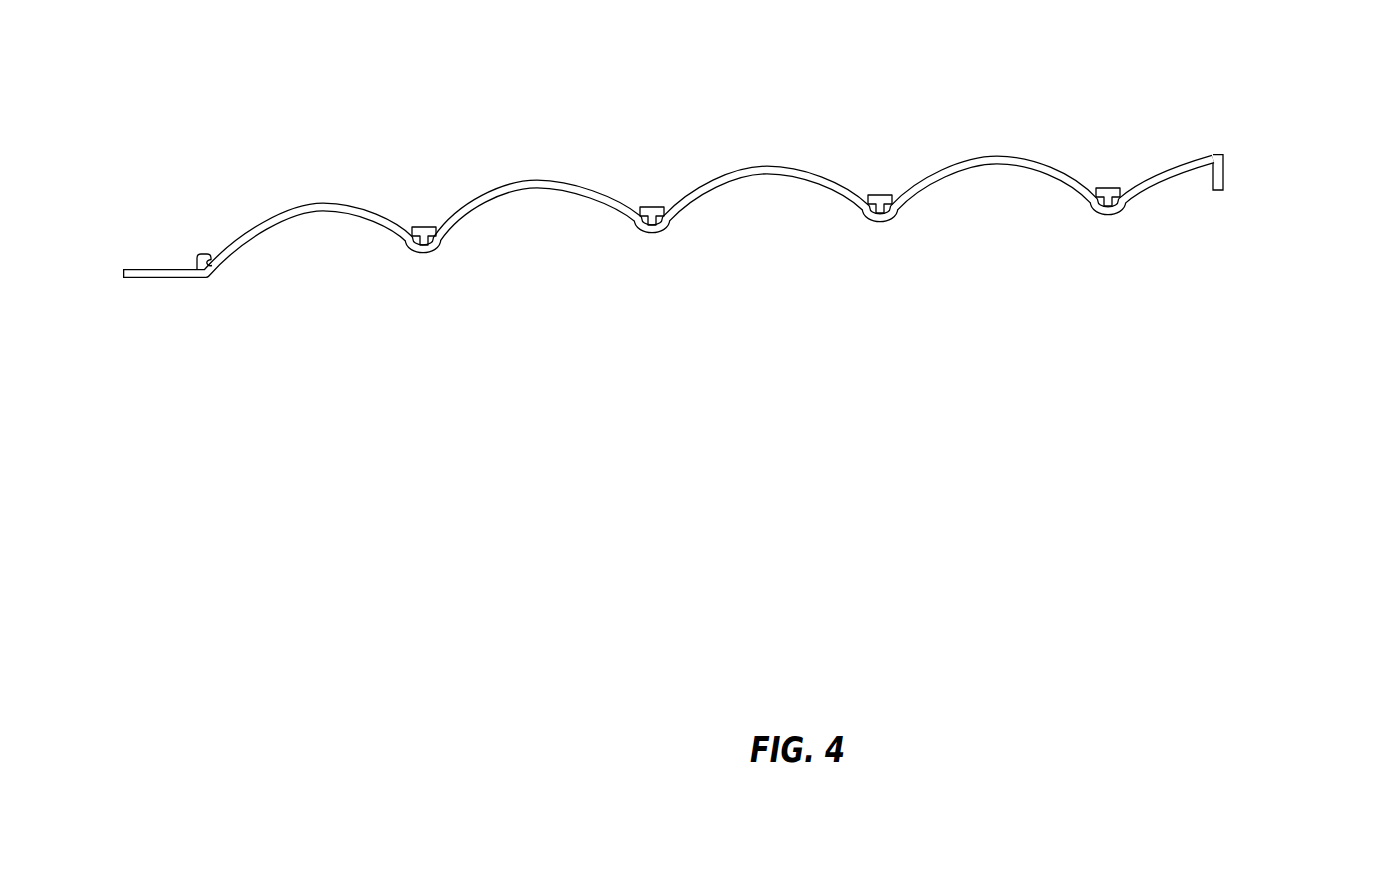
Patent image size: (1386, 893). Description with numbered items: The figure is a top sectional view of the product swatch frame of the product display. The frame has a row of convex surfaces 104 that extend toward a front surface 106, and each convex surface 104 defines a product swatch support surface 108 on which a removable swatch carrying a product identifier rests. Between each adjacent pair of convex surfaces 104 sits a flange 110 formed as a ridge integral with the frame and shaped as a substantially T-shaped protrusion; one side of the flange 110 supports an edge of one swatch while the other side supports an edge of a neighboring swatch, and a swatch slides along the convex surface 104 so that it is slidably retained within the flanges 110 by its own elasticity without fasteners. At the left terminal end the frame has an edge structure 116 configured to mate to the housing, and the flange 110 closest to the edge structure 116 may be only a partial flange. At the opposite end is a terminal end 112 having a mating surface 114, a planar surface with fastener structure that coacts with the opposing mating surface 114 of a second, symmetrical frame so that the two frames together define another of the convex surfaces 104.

The convex surface 104 is at (318, 212).
The front surface 106 is at (293, 208).
The product swatch support surface 108 is at (345, 208).
The flange 110 is at (420, 226).
The terminal end 112 is at (1223, 159).
The mating surface 114 is at (1224, 181).
The edge structure 116 is at (141, 269).